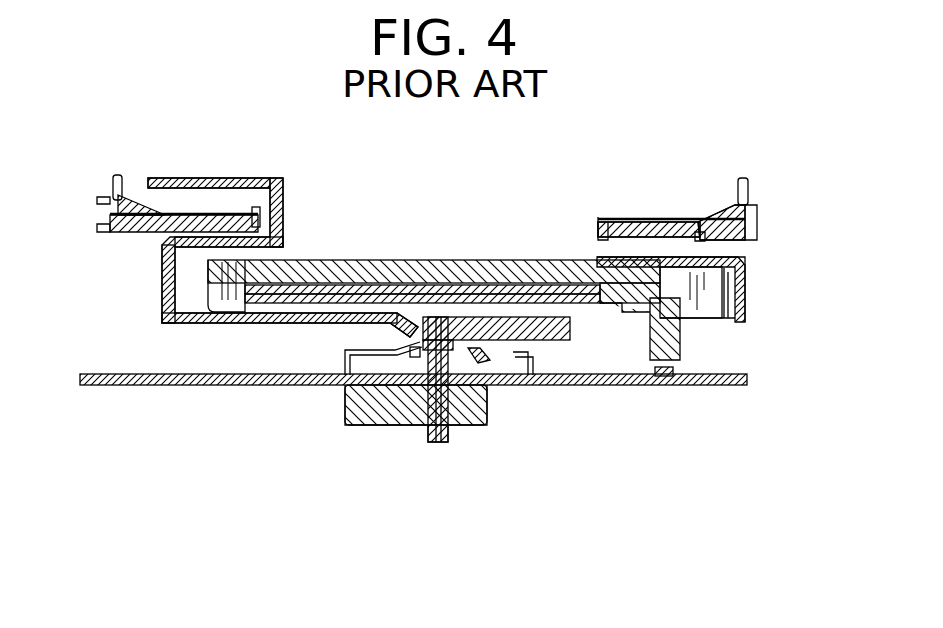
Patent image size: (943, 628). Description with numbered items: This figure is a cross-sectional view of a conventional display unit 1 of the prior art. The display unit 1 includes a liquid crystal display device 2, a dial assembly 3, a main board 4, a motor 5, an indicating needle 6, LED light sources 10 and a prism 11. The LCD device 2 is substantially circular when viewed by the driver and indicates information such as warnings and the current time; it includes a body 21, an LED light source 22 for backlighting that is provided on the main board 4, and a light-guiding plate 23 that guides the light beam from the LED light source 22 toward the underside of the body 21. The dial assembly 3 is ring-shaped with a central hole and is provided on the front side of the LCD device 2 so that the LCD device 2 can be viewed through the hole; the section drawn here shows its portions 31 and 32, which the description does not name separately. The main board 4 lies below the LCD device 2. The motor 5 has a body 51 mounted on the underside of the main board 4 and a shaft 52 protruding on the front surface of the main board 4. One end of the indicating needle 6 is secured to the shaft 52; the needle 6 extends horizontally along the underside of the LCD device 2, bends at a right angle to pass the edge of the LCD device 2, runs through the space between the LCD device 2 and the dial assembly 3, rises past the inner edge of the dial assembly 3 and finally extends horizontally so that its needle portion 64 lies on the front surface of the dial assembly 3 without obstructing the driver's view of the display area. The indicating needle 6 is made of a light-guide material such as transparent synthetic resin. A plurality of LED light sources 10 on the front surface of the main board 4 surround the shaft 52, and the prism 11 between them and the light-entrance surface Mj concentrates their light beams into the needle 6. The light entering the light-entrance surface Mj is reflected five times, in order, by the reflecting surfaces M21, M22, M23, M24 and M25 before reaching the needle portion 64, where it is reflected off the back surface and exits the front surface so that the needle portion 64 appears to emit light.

The display unit 1 is at (744, 158).
The liquid crystal display device 2 is at (538, 258).
The dial assembly 3 is at (130, 189).
The main board 4 is at (205, 386).
The motor 5 is at (388, 435).
The indicating needle 6 is at (347, 297).
The LED light source 10 is at (497, 386).
The prism 11 is at (488, 360).
The body 21 is at (487, 260).
The LED light source for backlighting 22 is at (675, 372).
The light-guiding plate 23 is at (680, 346).
The connector plate 31 is at (628, 218).
The connector housing 32 is at (720, 210).
The motor body 51 is at (402, 413).
The motor shaft 52 is at (400, 349).
The needle portion 64 is at (240, 178).
The reflecting surface M21 is at (413, 330).
The reflecting surface M22 is at (162, 315).
The reflecting surface M23 is at (162, 253).
The reflecting surface M24 is at (283, 233).
The reflecting surface M25 is at (275, 187).
The light-entrance surface Mj is at (350, 405).